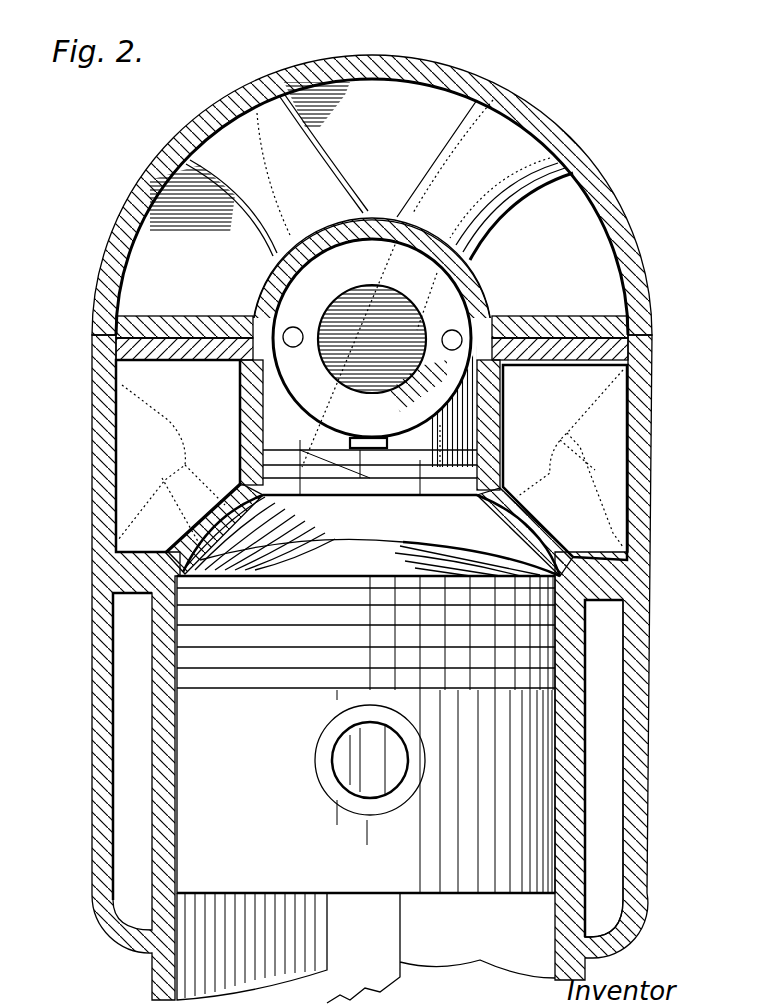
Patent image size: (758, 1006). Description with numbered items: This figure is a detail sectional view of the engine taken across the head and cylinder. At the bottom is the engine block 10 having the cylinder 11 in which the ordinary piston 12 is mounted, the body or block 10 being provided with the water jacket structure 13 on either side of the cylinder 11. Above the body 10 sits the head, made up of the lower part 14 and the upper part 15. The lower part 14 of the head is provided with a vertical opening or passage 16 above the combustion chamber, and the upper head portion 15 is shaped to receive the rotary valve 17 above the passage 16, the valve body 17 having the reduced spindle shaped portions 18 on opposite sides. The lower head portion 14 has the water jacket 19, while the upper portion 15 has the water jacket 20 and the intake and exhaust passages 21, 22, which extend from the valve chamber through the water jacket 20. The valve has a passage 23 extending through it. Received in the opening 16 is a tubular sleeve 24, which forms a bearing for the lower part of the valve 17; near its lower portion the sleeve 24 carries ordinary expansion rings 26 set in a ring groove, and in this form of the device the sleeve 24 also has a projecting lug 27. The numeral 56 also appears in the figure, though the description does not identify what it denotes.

The engine block 10 is at (162, 960).
The cylinder 11 is at (366, 948).
The piston 12 is at (366, 734).
The water jacket structure 13 is at (604, 768).
The lower part of the head 14 is at (653, 466).
The upper part of the head 15 is at (150, 205).
The vertical opening or passage 16 is at (505, 378).
The rotary valve 17 is at (452, 330).
The reduced spindle shaped portions 18 is at (345, 388).
The water jacket 19 is at (180, 434).
The water jacket 20 is at (521, 216).
The intake passage 21 is at (312, 158).
The exhaust passage 22 is at (481, 176).
The passage 23 is at (395, 262).
The tubular sleeve 24 is at (370, 420).
The expansion rings 26 is at (316, 465).
The projecting lug 27 is at (370, 438).
The hub bolt hole 56 is at (295, 328).